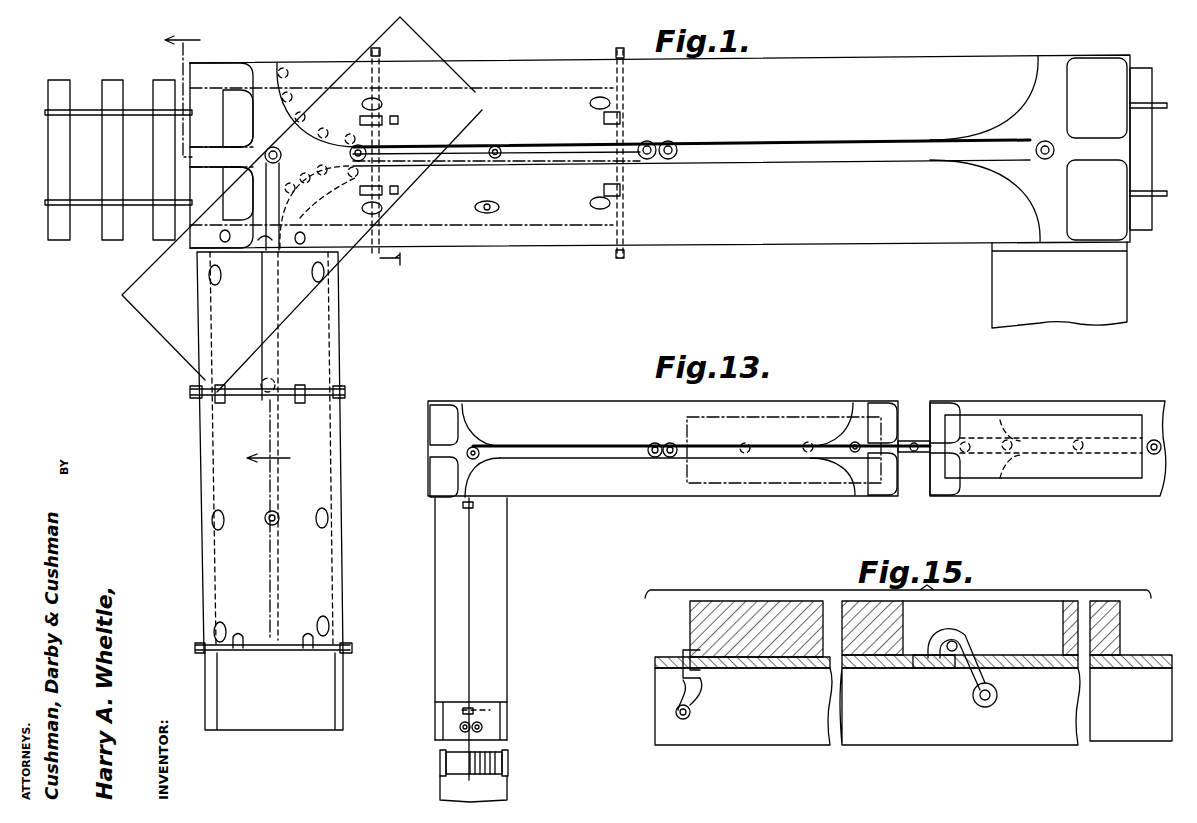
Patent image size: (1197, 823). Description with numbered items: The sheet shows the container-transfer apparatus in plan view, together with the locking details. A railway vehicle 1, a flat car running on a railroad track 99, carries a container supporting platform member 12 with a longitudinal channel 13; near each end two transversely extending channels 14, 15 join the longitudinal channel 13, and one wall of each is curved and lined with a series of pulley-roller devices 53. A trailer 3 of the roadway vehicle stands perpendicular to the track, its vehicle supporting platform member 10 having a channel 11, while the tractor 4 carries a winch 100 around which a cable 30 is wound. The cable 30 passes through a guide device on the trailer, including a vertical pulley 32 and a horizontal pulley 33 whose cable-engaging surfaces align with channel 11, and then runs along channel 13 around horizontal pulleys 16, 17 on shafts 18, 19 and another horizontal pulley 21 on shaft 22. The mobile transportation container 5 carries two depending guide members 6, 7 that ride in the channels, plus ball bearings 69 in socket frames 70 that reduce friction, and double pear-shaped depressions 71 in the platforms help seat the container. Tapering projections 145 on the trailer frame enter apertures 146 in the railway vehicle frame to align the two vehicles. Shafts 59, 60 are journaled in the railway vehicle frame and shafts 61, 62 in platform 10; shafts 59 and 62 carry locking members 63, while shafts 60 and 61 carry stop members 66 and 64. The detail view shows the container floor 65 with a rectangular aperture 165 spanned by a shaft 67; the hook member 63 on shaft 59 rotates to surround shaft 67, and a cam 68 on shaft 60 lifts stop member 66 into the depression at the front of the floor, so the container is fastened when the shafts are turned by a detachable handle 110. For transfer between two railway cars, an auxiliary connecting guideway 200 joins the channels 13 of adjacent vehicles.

In FIG. 1, the railway vehicle 1 is at (996, 45).
In FIG. 13, the railway vehicle 1 is at (551, 393).
In FIG. 15, the railway vehicle 1 is at (1141, 754).
In FIG. 1, the trailer 3 is at (987, 305).
In FIG. 13, the trailer 3 is at (500, 650).
In FIG. 13, the tractor 4 is at (433, 786).
In FIG. 1, the mobile transportation container 5 is at (364, 58).
In FIG. 13, the mobile transportation container 5 is at (880, 415).
In FIG. 1, the guide member 6 is at (350, 154).
In FIG. 1, the guide member 7 is at (295, 545).
In FIG. 1, the vehicle supporting platform member 10 is at (350, 556).
In FIG. 1, the channel 11 is at (272, 447).
In FIG. 1, the container supporting platform member 12 is at (912, 213).
In FIG. 13, the container supporting platform member 12 is at (619, 485).
In FIG. 15, the container supporting platform member 12 is at (1172, 655).
In FIG. 1, the longitudinal channel 13 is at (527, 152).
In FIG. 13, the longitudinal channel 13 is at (602, 454).
In FIG. 1, the transverse channel 14 is at (270, 215).
In FIG. 13, the transverse channel 14 is at (470, 497).
In FIG. 1, the transverse channel 15 is at (267, 73).
In FIG. 13, the transverse channel 15 is at (470, 404).
In FIG. 1, the horizontal pulley 16 is at (650, 141).
In FIG. 13, the horizontal pulley 16 is at (654, 442).
In FIG. 1, the horizontal pulley 17 is at (672, 141).
In FIG. 13, the horizontal pulley 17 is at (672, 442).
In FIG. 1, the shaft 18 is at (647, 160).
In FIG. 13, the shaft 18 is at (652, 458).
In FIG. 1, the shaft 19 is at (672, 160).
In FIG. 13, the shaft 19 is at (672, 458).
In FIG. 1, the horizontal pulley 21 is at (276, 206).
In FIG. 13, the horizontal pulley 21 is at (482, 460).
In FIG. 1, the shaft 22 is at (272, 146).
In FIG. 13, the cable 30 is at (490, 445).
In FIG. 13, the pulley 32 is at (490, 712).
In FIG. 13, the pulley 33 is at (460, 727).
In FIG. 1, the pulley-roller device 53 is at (312, 184).
In FIG. 1, the shaft 59 is at (380, 56).
In FIG. 15, the shaft 59 is at (998, 698).
In FIG. 1, the shaft 60 is at (617, 58).
In FIG. 15, the shaft 60 is at (690, 718).
In FIG. 1, the shaft 61 is at (350, 651).
In FIG. 1, the shaft 62 is at (342, 391).
In FIG. 1, the locking member 63 is at (378, 118).
In FIG. 15, the locking member 63 is at (972, 646).
In FIG. 1, the stop member 64 is at (238, 633).
In FIG. 15, the container floor 65 is at (1122, 620).
In FIG. 1, the stop member 66 is at (604, 118).
In FIG. 15, the stop member 66 is at (683, 655).
In FIG. 15, the shaft 67 is at (950, 664).
In FIG. 15, the cam 68 is at (705, 692).
In FIG. 1, the ball bearing 69 is at (490, 200).
In FIG. 1, the socket frame 70 is at (229, 526).
In FIG. 1, the depression 71 is at (478, 204).
In FIG. 1, the railroad track 99 is at (90, 206).
In FIG. 13, the winch 100 is at (505, 772).
In FIG. 1, the handle 110 is at (405, 260).
In FIG. 1, the projection 145 is at (210, 265).
In FIG. 1, the aperture 146 is at (228, 236).
In FIG. 15, the rectangular aperture 165 is at (1043, 610).
In FIG. 13, the auxiliary connecting guideway 200 is at (915, 455).